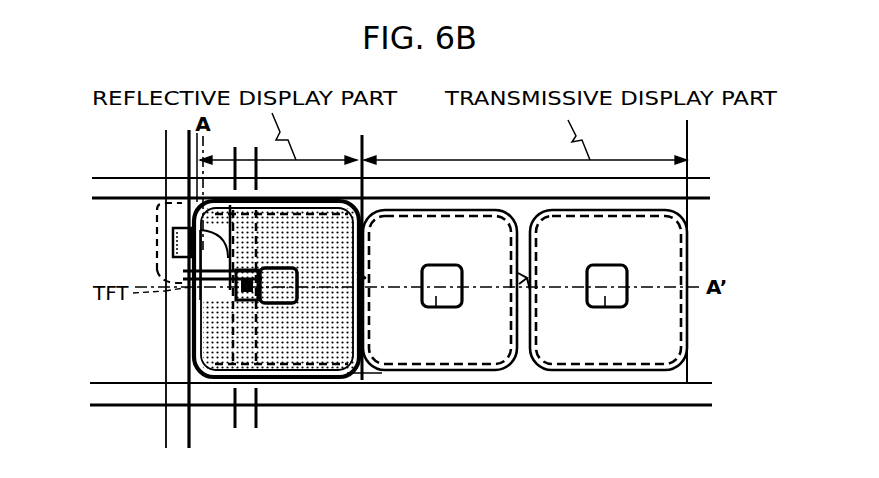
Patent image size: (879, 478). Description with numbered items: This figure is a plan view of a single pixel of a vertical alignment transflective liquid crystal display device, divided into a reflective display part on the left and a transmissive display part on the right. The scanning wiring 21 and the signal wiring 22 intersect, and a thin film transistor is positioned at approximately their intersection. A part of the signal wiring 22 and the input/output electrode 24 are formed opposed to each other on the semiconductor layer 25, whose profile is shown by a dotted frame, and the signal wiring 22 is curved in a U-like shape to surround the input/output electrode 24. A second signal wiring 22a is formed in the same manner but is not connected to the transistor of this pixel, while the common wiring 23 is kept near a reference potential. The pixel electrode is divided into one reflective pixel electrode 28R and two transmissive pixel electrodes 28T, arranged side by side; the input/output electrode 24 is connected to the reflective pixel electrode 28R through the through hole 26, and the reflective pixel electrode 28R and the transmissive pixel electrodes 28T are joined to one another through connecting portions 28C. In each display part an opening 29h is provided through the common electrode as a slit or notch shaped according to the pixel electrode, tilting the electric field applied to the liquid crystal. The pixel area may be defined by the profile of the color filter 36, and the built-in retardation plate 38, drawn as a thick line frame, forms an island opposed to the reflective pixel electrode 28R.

The scanning wiring 21 is at (177, 346).
The signal wiring 22 is at (146, 190).
The signal wiring 22a is at (140, 398).
The common wiring 23 is at (235, 416).
The input/output electrode 24 is at (173, 252).
The semiconductor layer 25 is at (183, 274).
The through hole 26 is at (243, 298).
The reflective pixel electrode 28R is at (297, 372).
The transmissive pixel electrode 28T is at (572, 372).
The connecting portion 28C is at (520, 277).
The opening 29h is at (436, 307).
The color filter 36 is at (659, 213).
The built-in retardation plate 38 is at (352, 373).